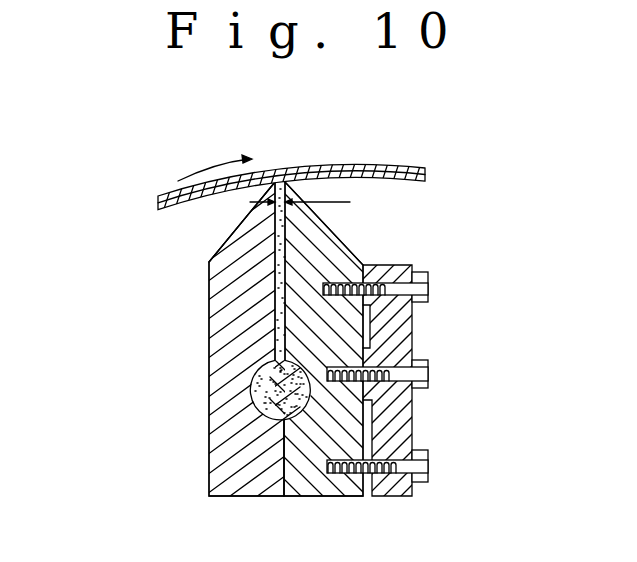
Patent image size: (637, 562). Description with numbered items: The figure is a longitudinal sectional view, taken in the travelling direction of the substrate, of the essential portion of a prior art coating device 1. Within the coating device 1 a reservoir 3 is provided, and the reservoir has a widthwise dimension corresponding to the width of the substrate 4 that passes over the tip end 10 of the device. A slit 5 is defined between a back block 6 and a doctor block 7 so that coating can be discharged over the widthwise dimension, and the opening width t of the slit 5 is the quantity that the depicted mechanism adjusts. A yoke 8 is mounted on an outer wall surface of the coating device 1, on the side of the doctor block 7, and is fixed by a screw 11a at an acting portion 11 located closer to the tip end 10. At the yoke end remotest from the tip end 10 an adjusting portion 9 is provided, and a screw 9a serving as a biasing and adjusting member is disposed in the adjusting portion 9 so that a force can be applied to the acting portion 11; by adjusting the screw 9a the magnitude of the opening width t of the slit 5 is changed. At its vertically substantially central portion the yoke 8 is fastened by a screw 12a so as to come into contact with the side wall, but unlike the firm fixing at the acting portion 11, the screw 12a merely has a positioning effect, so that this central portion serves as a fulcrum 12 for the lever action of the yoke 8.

The coating device 1 is at (128, 333).
The reservoir 3 is at (250, 393).
The substrate 4 is at (160, 210).
The slit 5 is at (233, 298).
The back block 6 is at (252, 213).
The doctor block 7 is at (328, 240).
The yoke 8 is at (405, 337).
The adjusting portion 9 is at (400, 470).
The screw 9a is at (428, 464).
The tip end 10 is at (286, 182).
The acting portion 11 is at (400, 265).
The screw 11a is at (428, 288).
The fulcrum 12 is at (392, 368).
The screw 12a is at (428, 373).
The opening width t is at (338, 201).